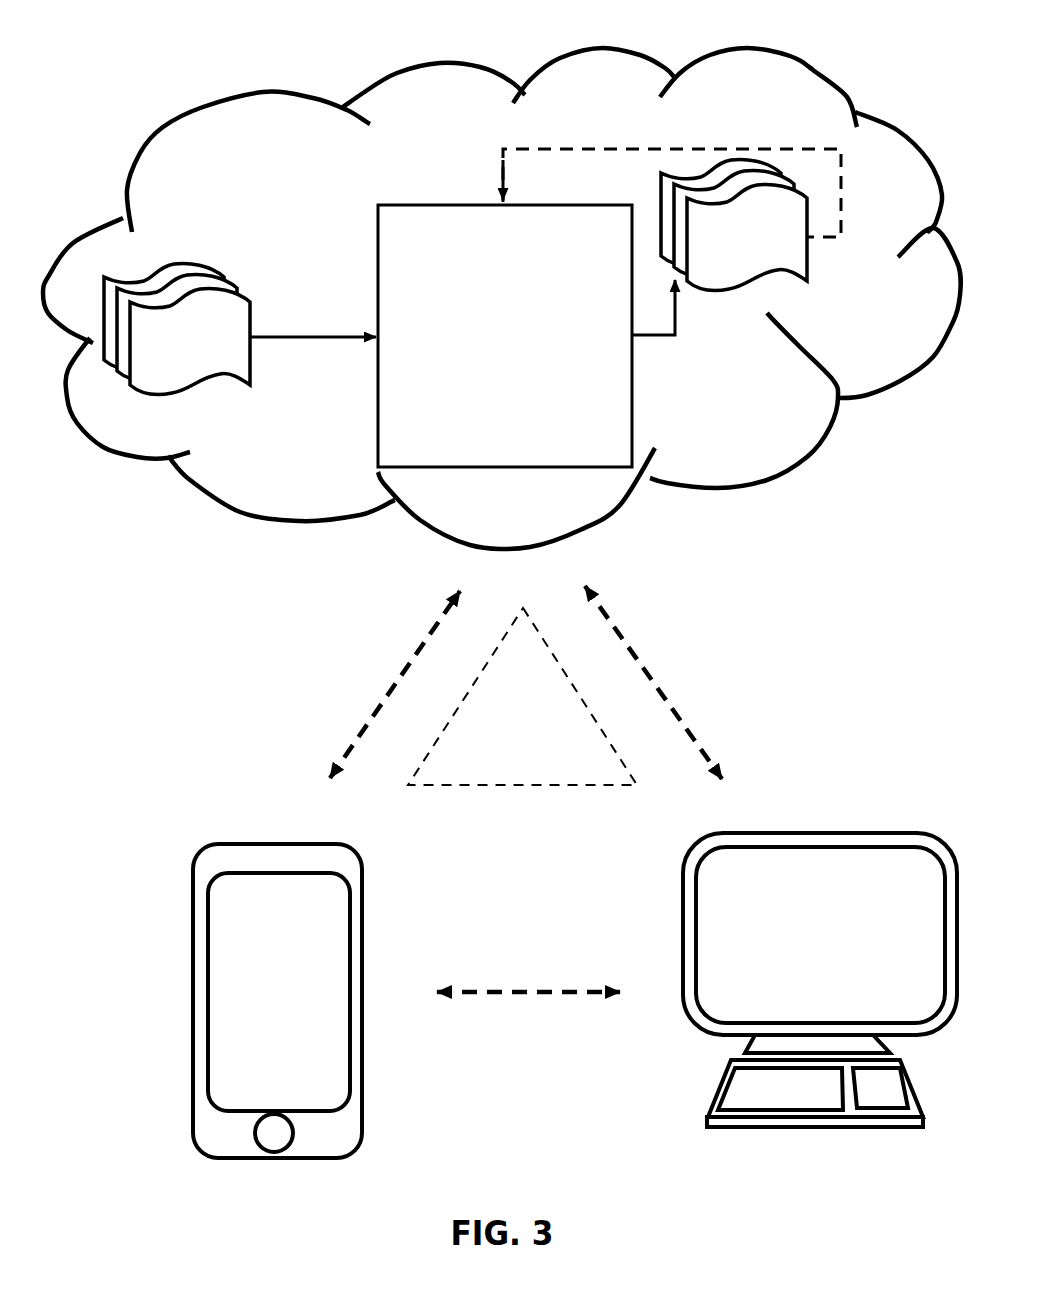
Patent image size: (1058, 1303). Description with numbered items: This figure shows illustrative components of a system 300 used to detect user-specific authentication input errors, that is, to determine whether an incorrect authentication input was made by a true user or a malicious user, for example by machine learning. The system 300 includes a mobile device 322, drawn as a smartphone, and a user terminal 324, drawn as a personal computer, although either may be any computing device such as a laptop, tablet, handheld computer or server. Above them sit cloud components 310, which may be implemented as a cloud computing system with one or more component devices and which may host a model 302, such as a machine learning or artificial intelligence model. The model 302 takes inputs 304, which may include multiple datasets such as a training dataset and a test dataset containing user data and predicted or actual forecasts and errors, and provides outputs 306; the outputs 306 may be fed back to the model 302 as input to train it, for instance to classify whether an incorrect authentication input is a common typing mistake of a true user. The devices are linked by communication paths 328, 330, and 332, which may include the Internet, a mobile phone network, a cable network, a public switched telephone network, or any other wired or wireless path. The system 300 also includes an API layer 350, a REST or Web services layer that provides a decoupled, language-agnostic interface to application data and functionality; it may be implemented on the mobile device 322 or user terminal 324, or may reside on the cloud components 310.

The system 300 is at (482, 48).
The cloud components 310 is at (803, 110).
The model 302 is at (485, 348).
The inputs 304 is at (195, 271).
The outputs 306 is at (783, 265).
The API layer 350 is at (503, 721).
The communication path 328 is at (348, 672).
The communication path 330 is at (731, 637).
The communication path 332 is at (518, 962).
The mobile device 322 is at (265, 817).
The user terminal 324 is at (812, 825).